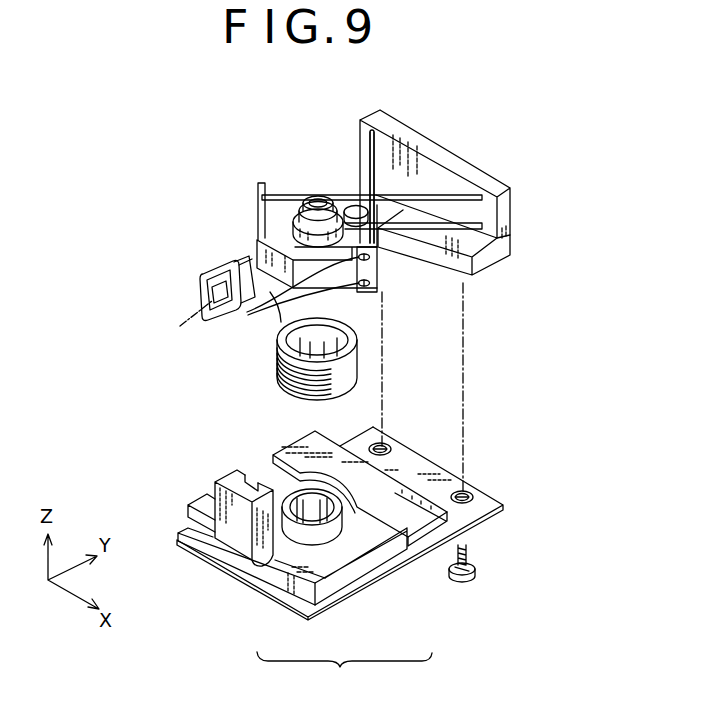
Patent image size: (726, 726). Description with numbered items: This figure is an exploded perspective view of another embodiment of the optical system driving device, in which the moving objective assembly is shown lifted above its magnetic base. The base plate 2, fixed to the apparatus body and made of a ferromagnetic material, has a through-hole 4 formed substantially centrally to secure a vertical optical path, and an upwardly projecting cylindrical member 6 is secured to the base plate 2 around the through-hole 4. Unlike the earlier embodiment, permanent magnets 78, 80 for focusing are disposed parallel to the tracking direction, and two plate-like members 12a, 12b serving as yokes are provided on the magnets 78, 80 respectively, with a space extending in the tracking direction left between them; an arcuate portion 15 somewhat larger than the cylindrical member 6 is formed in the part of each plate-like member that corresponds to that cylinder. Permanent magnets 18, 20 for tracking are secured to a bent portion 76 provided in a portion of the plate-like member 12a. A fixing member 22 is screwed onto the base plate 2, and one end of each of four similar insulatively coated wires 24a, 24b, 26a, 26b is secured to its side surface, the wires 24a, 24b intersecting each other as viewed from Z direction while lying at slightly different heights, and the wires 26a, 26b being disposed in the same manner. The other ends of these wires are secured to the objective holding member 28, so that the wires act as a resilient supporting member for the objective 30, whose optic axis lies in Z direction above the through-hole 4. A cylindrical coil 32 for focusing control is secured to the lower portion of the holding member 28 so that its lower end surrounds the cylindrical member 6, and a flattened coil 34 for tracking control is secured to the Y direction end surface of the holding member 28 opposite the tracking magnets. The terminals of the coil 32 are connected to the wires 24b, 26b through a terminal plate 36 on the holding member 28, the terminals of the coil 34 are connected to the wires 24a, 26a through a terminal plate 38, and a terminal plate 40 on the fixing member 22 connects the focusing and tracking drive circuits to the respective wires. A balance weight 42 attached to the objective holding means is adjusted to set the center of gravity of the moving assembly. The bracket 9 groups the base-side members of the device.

The base plate 2 is at (490, 517).
The through-hole 4 is at (306, 473).
The cylindrical member 6 is at (343, 522).
The base assembly 9 is at (344, 673).
The plate-like member 12a is at (287, 586).
The plate-like member 12b is at (416, 500).
The arcuate portion 15 is at (365, 498).
The permanent magnet 18 is at (225, 476).
The permanent magnet 20 is at (255, 488).
The fixing member 22 is at (505, 256).
The wire 24a is at (380, 147).
The wire 24b is at (462, 196).
The wire 26a is at (372, 187).
The wire 26b is at (472, 222).
The objective holding member 28 is at (257, 238).
The objective 30 is at (318, 204).
The cylindrical coil 32 is at (278, 357).
The flattened coil 34 is at (205, 277).
The terminal plate 36 is at (257, 192).
The terminal plate 38 is at (378, 278).
The terminal plate 40 is at (456, 163).
The balance weight 42 is at (353, 200).
The bent portion 76 is at (225, 533).
The permanent magnet 78 is at (334, 590).
The permanent magnet 80 is at (425, 535).